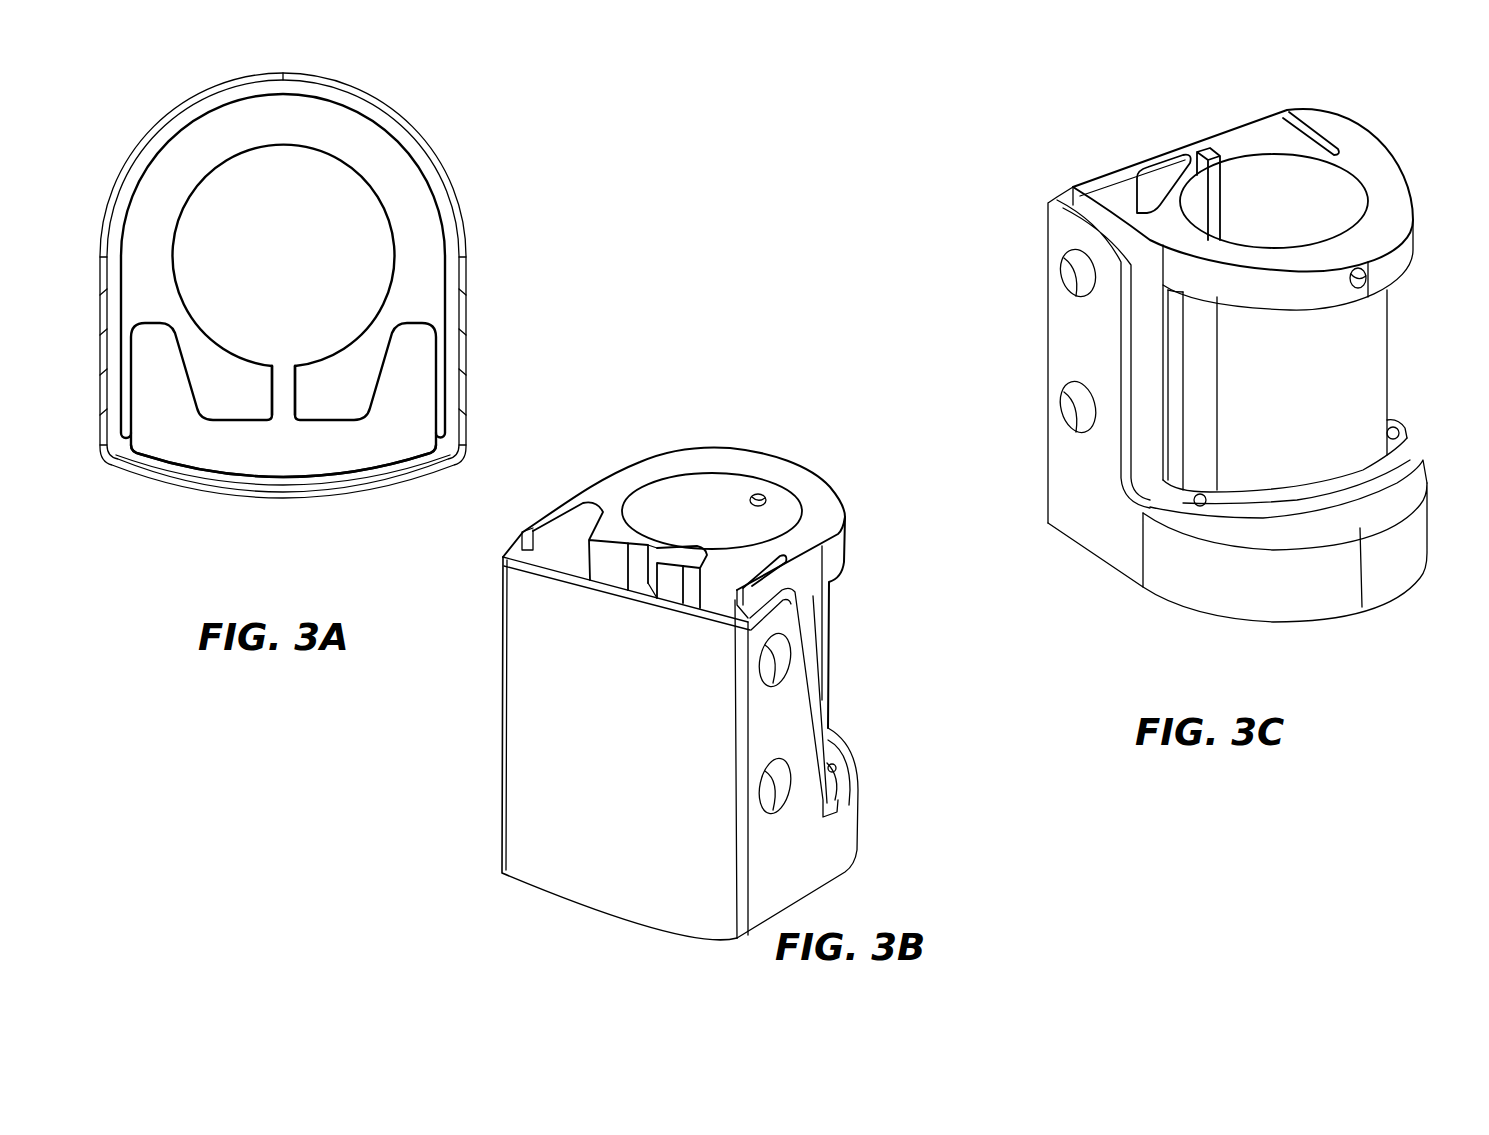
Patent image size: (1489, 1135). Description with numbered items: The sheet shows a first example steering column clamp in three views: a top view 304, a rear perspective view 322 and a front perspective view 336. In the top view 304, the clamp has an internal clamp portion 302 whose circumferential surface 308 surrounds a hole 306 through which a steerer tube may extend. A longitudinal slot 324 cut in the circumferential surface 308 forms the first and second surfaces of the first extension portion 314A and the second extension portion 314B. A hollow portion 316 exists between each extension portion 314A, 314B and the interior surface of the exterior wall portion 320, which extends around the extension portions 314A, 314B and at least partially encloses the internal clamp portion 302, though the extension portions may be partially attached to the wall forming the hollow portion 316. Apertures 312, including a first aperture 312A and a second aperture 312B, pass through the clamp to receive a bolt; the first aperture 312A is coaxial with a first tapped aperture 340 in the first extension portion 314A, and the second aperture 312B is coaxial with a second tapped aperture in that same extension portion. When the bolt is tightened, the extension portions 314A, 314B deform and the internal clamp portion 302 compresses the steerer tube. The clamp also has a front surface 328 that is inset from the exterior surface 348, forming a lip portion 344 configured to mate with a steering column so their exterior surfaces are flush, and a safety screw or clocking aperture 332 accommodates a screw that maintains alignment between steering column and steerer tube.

In FIG. 3A, the internal clamp portion 302 is at (271, 313).
In FIG. 3A, the top view 304 is at (478, 131).
In FIG. 3A, the hole 306 is at (312, 252).
In FIG. 3A, the circumferential surface 308 is at (390, 270).
In FIG. 3A, the aperture 312 is at (467, 383).
In FIG. 3B, the first aperture 312A is at (777, 660).
In FIG. 3C, the first aperture 312A is at (1073, 400).
In FIG. 3B, the second aperture 312B is at (773, 790).
In FIG. 3C, the second aperture 312B is at (1080, 274).
In FIG. 3A, the first extension portion 314A is at (263, 415).
In FIG. 3A, the second extension portion 314B is at (307, 400).
In FIG. 3A, the hollow portion 316 is at (417, 427).
In FIG. 3C, the hollow portion 316 is at (1118, 192).
In FIG. 3A, the exterior wall portion 320 is at (193, 477).
In FIG. 3B, the exterior wall portion 320 is at (525, 800).
In FIG. 3B, the rear perspective view 322 is at (856, 467).
In FIG. 3A, the longitudinal slot 324 is at (287, 421).
In FIG. 3B, the longitudinal slot 324 is at (660, 547).
In FIG. 3C, the longitudinal slot 324 is at (1208, 172).
In FIG. 3B, the front surface 328 is at (827, 707).
In FIG. 3B, the safety screw or clocking aperture 332 is at (763, 493).
In FIG. 3C, the safety screw or clocking aperture 332 is at (1358, 286).
In FIG. 3C, the front perspective view 336 is at (1371, 118).
In FIG. 3C, the first tapped aperture 340 is at (1220, 233).
In FIG. 3C, the lip portion 344 is at (1287, 543).
In FIG. 3C, the exterior surface 348 is at (1213, 614).